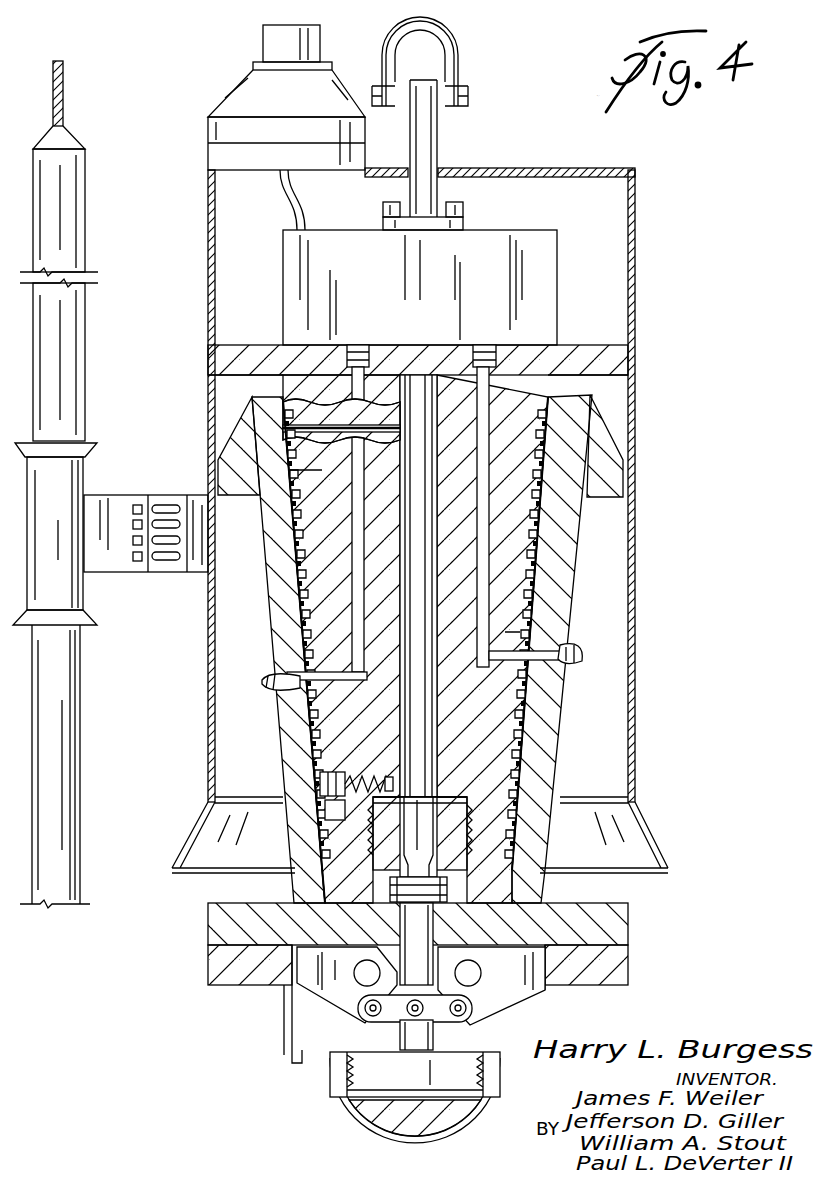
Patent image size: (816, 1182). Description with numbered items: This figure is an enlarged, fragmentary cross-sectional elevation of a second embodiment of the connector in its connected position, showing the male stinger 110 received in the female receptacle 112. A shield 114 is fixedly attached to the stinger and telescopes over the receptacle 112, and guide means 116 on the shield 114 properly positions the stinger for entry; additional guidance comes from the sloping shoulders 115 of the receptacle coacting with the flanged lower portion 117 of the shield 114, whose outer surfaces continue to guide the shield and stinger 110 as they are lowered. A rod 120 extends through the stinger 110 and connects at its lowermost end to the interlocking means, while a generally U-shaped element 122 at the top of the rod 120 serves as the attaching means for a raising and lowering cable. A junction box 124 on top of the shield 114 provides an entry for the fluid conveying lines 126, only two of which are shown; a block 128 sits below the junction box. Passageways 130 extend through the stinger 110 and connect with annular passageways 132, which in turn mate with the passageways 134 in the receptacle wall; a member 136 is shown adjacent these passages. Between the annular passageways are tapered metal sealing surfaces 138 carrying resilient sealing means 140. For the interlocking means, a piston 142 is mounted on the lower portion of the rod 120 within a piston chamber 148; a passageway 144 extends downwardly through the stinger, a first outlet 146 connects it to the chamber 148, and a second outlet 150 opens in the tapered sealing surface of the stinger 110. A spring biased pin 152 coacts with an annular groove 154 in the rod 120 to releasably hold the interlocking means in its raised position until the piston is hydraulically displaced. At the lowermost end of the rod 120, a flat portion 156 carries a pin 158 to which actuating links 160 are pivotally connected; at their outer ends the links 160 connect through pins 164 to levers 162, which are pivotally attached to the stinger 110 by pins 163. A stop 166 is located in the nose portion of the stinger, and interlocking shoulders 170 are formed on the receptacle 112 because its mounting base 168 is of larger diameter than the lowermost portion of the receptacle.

The stinger 110 is at (388, 335).
The receptacle 112 is at (580, 600).
The shield 114 is at (636, 207).
The sloping shoulders 115 is at (235, 453).
The guide means 116 is at (97, 491).
The flanged lower portion 117 is at (660, 852).
The rod 120 is at (445, 136).
The U-shaped element 122 is at (460, 52).
The junction box 124 is at (248, 92).
The fluid conveying lines 126 is at (285, 193).
The upper block 128 is at (535, 275).
The passageways 130 is at (300, 470).
The annular passageways 132 is at (306, 636).
The passageways in the receptacle wall 134 is at (268, 682).
The stop pin 136 is at (580, 657).
The tapered metal sealing surfaces 138 is at (300, 584).
The resilient sealing means 140 is at (302, 610).
The piston 142 is at (440, 893).
The passageway 144 is at (398, 470).
The first outlet 146 is at (445, 415).
The piston chamber 148 is at (393, 345).
The second outlet 150 is at (283, 426).
The spring biased pin 152 is at (320, 782).
The annular groove 154 is at (428, 866).
The flat portion 156 is at (490, 1038).
The pin 158 is at (415, 1074).
The actuating links 160 is at (345, 1082).
The levers 162 is at (330, 990).
The pins 163 is at (466, 962).
The pins 164 is at (333, 1050).
The stop 166 is at (500, 1065).
The mounting base 168 is at (620, 968).
The interlocking shoulders 170 is at (207, 955).